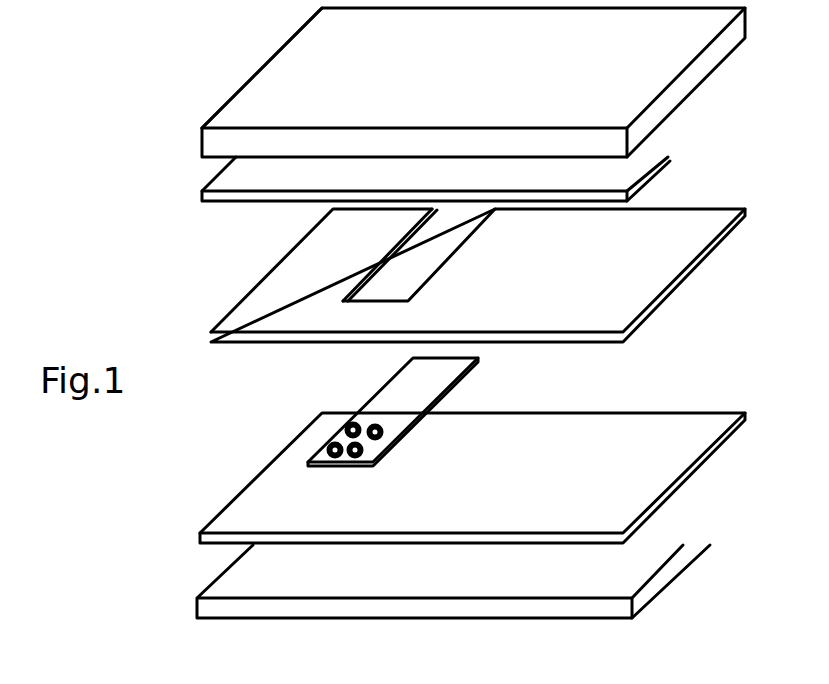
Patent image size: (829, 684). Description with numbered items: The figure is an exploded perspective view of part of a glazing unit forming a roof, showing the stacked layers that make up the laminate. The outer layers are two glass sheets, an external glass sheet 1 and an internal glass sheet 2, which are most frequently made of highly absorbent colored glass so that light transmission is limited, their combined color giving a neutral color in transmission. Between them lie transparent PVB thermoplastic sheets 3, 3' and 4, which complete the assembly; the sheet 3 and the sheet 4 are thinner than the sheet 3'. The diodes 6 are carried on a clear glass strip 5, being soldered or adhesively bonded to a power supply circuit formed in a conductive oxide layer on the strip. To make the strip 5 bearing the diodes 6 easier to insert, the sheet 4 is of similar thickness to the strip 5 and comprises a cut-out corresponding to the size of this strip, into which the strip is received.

The external glass sheet 1 is at (746, 85).
The internal glass sheet 2 is at (453, 581).
The PVB thermoplastic sheet 3 is at (436, 179).
The PVB thermoplastic sheet 3' is at (472, 478).
The PVB thermoplastic sheet 4 is at (478, 275).
The clear glass strip 5 is at (393, 412).
The diodes 6 is at (330, 445).